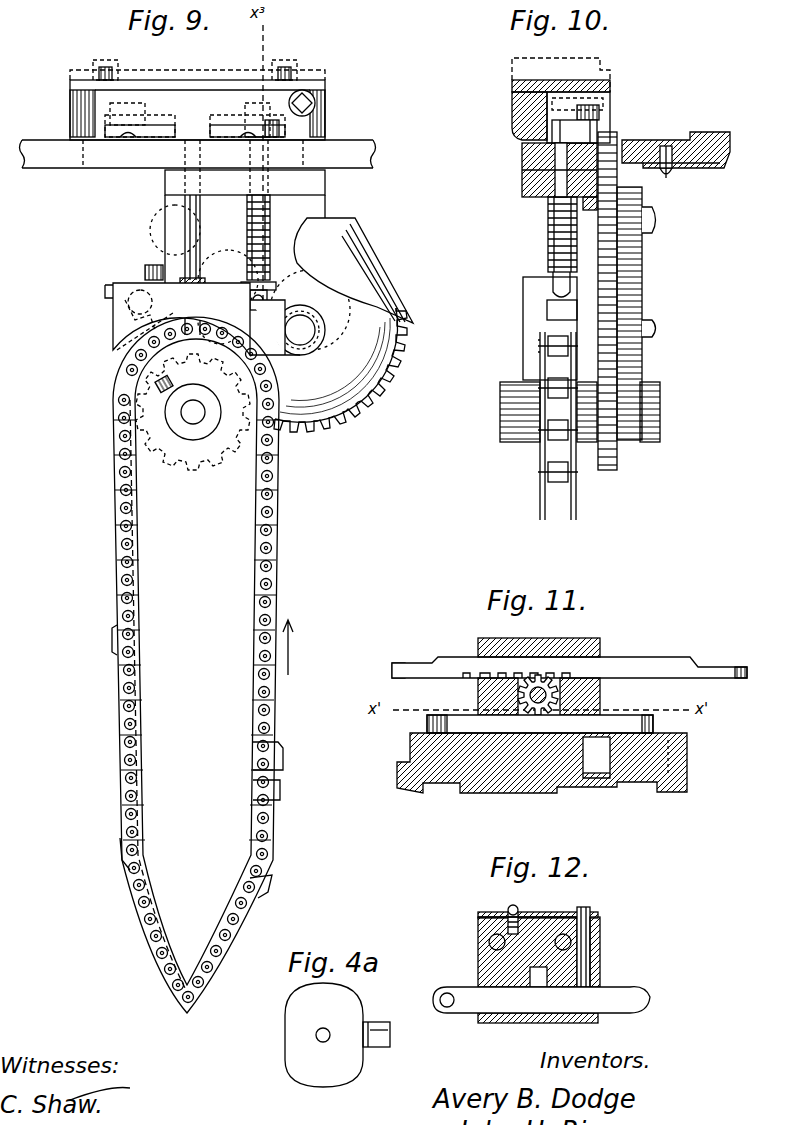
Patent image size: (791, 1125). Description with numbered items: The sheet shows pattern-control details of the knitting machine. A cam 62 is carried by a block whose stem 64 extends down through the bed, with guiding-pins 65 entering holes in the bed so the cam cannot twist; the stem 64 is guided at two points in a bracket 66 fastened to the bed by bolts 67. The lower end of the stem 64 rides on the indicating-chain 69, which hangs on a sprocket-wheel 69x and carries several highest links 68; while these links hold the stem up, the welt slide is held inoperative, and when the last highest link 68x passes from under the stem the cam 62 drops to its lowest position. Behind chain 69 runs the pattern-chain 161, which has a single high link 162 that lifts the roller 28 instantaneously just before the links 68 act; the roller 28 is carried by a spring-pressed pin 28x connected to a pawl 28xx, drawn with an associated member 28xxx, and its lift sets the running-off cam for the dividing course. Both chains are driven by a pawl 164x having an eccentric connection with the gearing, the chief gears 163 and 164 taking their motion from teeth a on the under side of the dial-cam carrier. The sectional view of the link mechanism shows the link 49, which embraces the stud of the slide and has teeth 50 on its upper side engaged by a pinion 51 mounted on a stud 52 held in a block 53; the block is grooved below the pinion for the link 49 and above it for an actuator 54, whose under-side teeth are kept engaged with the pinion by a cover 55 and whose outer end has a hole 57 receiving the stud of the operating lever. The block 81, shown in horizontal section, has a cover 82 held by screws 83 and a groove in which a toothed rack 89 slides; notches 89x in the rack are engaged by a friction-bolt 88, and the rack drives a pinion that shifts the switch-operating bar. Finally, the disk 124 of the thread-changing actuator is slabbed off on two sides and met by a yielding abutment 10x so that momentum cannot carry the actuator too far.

In FIG. 9, the cam 62 is at (236, 85).
In FIG. 10, the cam 62 is at (512, 87).
In FIG. 9, the roller 28 is at (282, 133).
In FIG. 10, the roller 28 is at (597, 117).
In FIG. 9, the guiding-pins 65 is at (76, 170).
In FIG. 10, the guiding-pins 65 is at (513, 110).
In FIG. 9, the bracket 66 is at (165, 186).
In FIG. 10, the bracket 66 is at (522, 185).
In FIG. 9, the stem 64 is at (185, 212).
In FIG. 9, the gear 163 is at (320, 203).
In FIG. 10, the gear 163 is at (623, 137).
In FIG. 9, the gear 164 is at (360, 362).
In FIG. 10, the gear 164 is at (640, 367).
In FIG. 9, the pawl 164x is at (306, 336).
In FIG. 10, the pawl 164x is at (612, 333).
In FIG. 9, the bolts 67 is at (150, 272).
In FIG. 9, the pawl 28xx is at (227, 300).
In FIG. 10, the spring-pressed pin 28x is at (550, 231).
In FIG. 10, the lever arm 28xxx is at (547, 310).
In FIG. 9, the pattern-chain 161 is at (122, 723).
In FIG. 10, the pattern-chain 161 is at (582, 478).
In FIG. 9, the high link 162 is at (118, 640).
In FIG. 9, the indicating-chain 69 is at (260, 718).
In FIG. 10, the indicating-chain 69 is at (540, 477).
In FIG. 9, the sprocket-wheel 69x is at (177, 487).
In FIG. 9, the highest links 68 is at (278, 760).
In FIG. 9, the last highest link 68x is at (272, 891).
In FIG. 11, the hole 57 is at (410, 663).
In FIG. 11, the actuator 54 is at (670, 657).
In FIG. 11, the cover 55 is at (587, 638).
In FIG. 11, the pinion 51 is at (478, 697).
In FIG. 11, the block 53 is at (596, 697).
In FIG. 11, the stud 52 is at (548, 697).
In FIG. 11, the teeth 50 is at (619, 715).
In FIG. 11, the link 49 is at (650, 717).
In FIG. 12, the block 81 is at (478, 963).
In FIG. 12, the screws 83 is at (518, 912).
In FIG. 12, the cover 82 is at (552, 915).
In FIG. 12, the friction-bolt 88 is at (593, 935).
In FIG. 12, the notches 89x is at (603, 985).
In FIG. 12, the toothed rack 89 is at (645, 978).
In FIG. 4A, the cap 124 is at (313, 1073).
In FIG. 4A, the yielding abutment 10x is at (365, 1013).
In FIG. 4A, the teeth a is at (378, 1033).